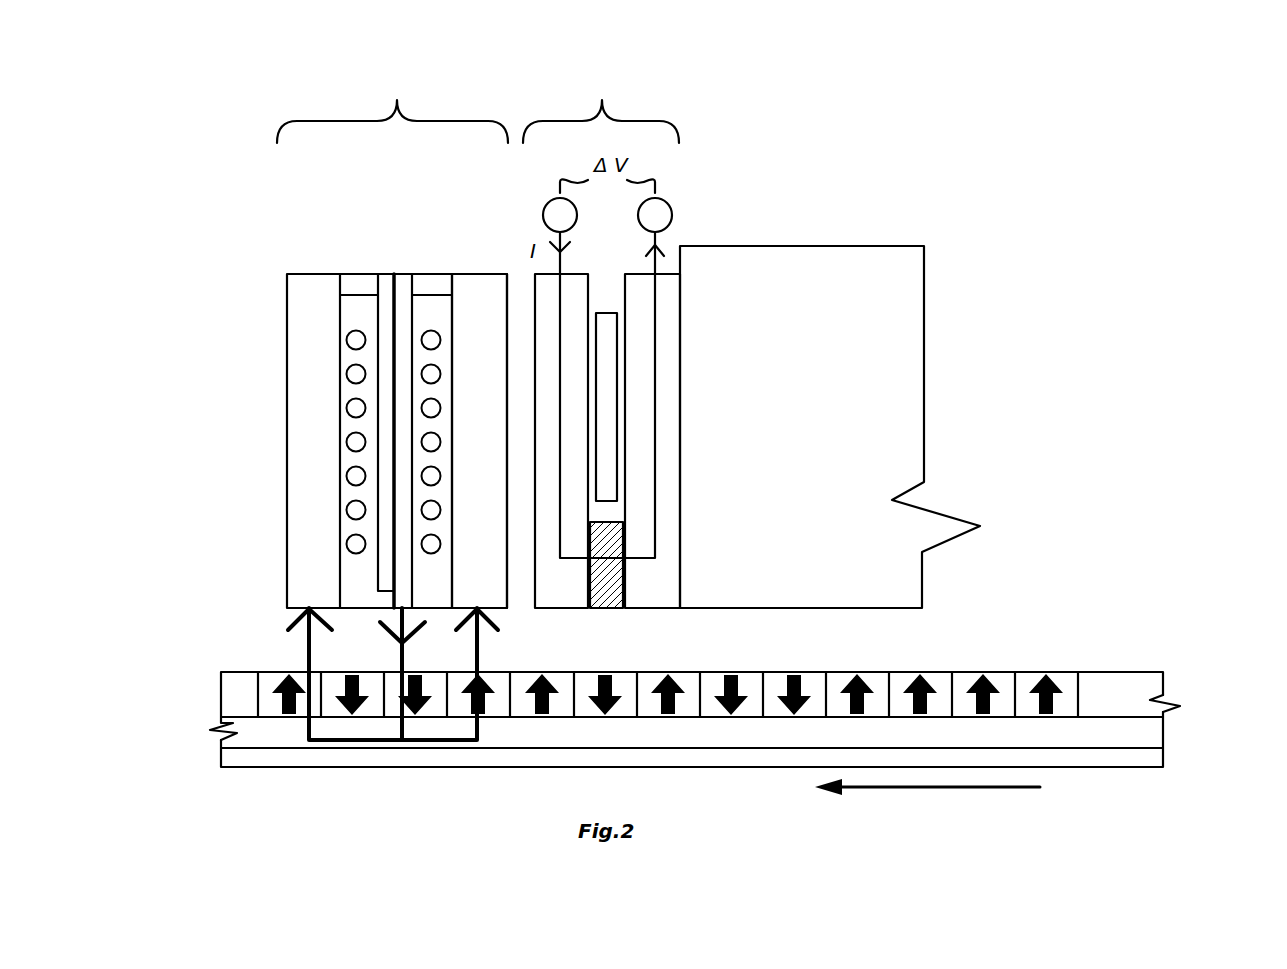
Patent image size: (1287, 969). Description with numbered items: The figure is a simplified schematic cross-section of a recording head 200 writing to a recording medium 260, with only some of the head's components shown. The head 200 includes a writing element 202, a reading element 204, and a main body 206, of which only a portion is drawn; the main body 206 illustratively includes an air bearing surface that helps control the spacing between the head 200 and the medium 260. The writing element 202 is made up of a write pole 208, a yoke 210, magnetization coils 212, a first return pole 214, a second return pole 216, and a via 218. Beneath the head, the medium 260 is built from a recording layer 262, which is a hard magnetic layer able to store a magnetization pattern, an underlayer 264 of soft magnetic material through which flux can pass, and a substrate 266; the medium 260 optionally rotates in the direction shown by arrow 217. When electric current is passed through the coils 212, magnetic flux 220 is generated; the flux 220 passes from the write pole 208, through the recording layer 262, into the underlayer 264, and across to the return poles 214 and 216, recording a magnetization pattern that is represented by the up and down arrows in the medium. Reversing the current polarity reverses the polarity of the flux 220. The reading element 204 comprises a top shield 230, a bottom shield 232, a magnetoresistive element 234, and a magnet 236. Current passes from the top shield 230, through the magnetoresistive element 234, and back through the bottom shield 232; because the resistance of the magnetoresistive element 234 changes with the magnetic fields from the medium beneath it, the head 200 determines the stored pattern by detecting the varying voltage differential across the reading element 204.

The recording head 200 is at (822, 179).
The writing element 202 is at (443, 120).
The reading element 204 is at (632, 120).
The main body 206 is at (818, 258).
The write pole 208 is at (407, 283).
The yoke 210 is at (387, 280).
The magnetization coils 212 is at (347, 408).
The first return pole 214 is at (312, 357).
The second return pole 216 is at (472, 287).
The arrow 217 is at (942, 788).
The via 218 is at (348, 282).
The magnetic flux 220 is at (308, 652).
The top shield 230 is at (555, 603).
The bottom shield 232 is at (662, 603).
The magnetoresistive element 234 is at (595, 603).
The magnet 236 is at (612, 325).
The recording medium 260 is at (737, 699).
The recording layer 262 is at (1157, 685).
The underlayer 264 is at (1158, 738).
The substrate 266 is at (1160, 758).